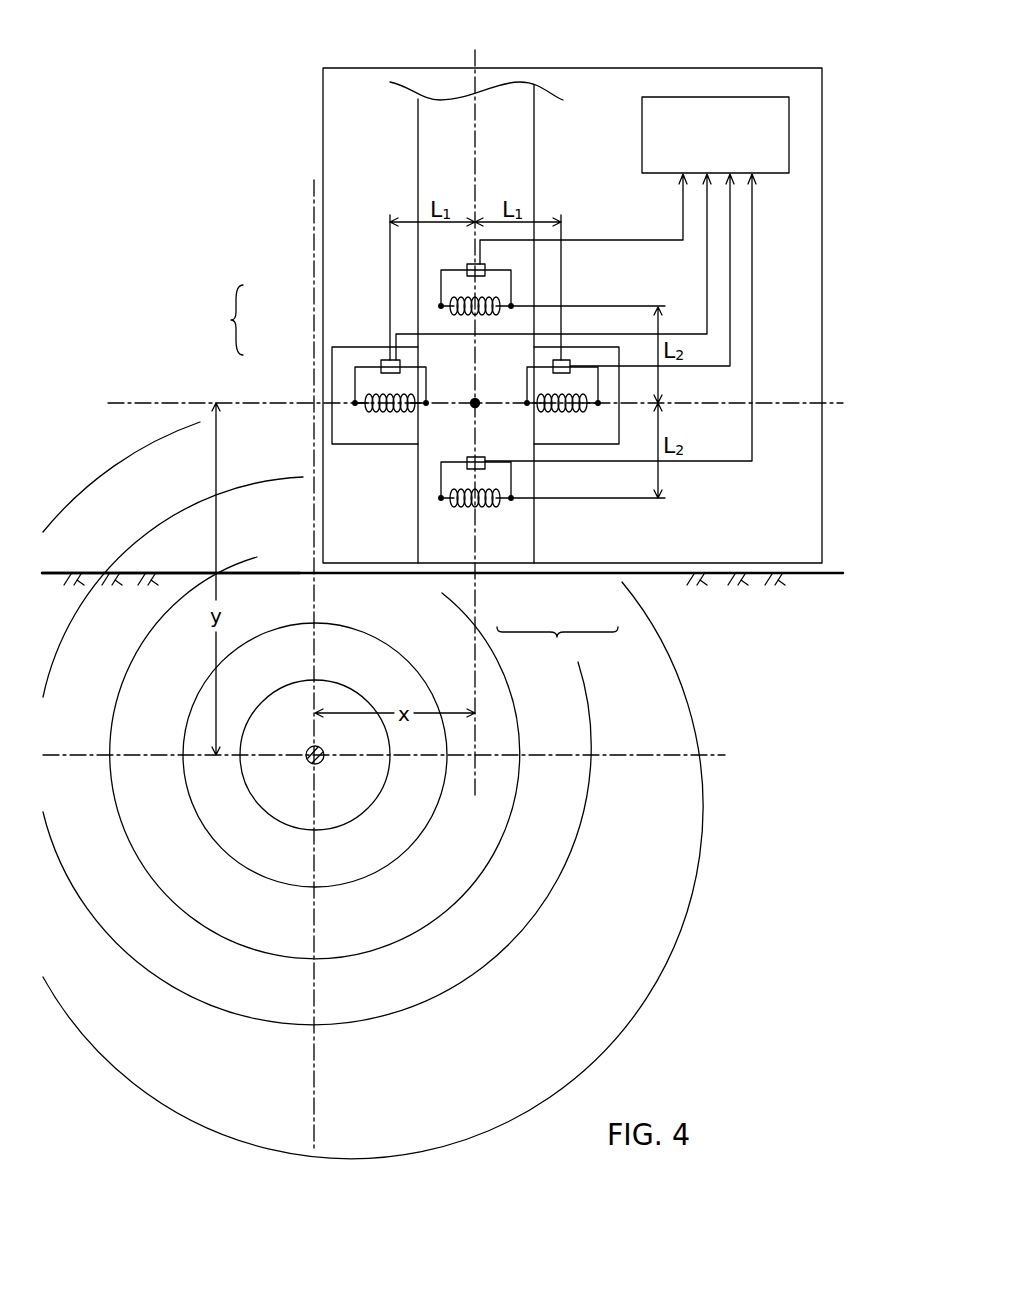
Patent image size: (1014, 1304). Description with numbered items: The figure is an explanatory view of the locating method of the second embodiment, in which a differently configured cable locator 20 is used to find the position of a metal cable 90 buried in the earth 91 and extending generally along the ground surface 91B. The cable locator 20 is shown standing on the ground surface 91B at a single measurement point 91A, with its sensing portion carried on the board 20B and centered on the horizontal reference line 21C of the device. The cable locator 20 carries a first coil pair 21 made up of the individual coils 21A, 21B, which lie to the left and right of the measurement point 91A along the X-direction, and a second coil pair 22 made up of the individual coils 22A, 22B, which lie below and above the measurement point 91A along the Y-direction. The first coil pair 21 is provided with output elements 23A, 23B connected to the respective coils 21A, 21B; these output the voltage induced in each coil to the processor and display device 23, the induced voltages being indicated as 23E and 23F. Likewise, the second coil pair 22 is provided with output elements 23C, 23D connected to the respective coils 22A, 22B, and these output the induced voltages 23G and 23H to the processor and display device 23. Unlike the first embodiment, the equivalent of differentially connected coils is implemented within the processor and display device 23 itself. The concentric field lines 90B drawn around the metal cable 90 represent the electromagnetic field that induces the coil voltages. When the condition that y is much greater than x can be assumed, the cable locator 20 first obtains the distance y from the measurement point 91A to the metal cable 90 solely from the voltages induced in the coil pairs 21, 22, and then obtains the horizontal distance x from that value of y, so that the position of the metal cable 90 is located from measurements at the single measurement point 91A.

The cable locator 20 is at (766, 62).
The sensor board 20B is at (418, 145).
The first coil pair 21 is at (557, 646).
The individual coil 21A is at (392, 409).
The individual coil 21B is at (562, 409).
The horizontal center line 21C is at (135, 401).
The second coil pair 22 is at (222, 320).
The individual coil 22A is at (457, 490).
The individual coil 22B is at (455, 302).
The processor and display device 23 is at (642, 122).
The output element 23A is at (385, 358).
The output element 23B is at (568, 360).
The output element 23C is at (470, 457).
The output element 23D is at (470, 266).
The induced voltage 23E is at (707, 271).
The induced voltage 23F is at (730, 285).
The induced voltage 23G is at (752, 368).
The induced voltage 23H is at (683, 207).
The metal cable 90 is at (322, 763).
The magnetic field lines 90B is at (485, 868).
The earth 91 is at (278, 600).
The measurement point 91A is at (477, 400).
The ground surface 91B is at (97, 573).